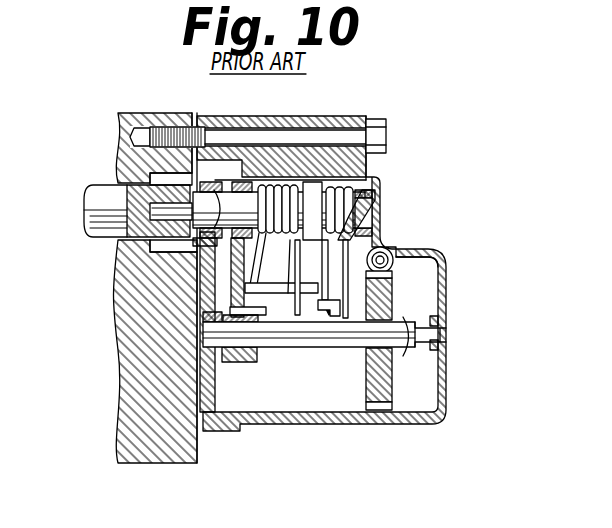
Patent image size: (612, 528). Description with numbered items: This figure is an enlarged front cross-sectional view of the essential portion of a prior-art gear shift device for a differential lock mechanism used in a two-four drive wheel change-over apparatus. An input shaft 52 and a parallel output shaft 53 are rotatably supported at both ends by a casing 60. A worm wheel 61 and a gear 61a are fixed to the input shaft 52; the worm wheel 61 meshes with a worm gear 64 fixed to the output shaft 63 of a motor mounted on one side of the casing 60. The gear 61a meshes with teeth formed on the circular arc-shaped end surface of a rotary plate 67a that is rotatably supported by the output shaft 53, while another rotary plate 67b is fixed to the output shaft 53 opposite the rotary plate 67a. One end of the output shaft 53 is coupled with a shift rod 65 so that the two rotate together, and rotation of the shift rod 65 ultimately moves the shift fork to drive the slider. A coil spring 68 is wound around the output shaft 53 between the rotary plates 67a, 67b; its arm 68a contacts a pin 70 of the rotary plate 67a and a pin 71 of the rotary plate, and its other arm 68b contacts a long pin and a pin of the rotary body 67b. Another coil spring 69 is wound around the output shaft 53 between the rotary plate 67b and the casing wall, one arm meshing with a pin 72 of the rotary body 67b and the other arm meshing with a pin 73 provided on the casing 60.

The input shaft 52 is at (311, 315).
The output shaft 53 is at (165, 245).
The casing 60 is at (448, 306).
The worm wheel 61 is at (392, 297).
The gear 61a is at (238, 362).
The output shaft of motor 63 is at (383, 252).
The worm gear 64 is at (400, 270).
The shift rod 65 is at (98, 192).
The rotary plate 67a is at (398, 196).
The rotary plate 67b is at (343, 240).
The coil spring 68 is at (283, 190).
The arm of coil spring 68a is at (350, 193).
The arm of coil spring 68b is at (288, 295).
The coil spring 69 is at (258, 288).
The pin 70 is at (266, 347).
The pin 71 is at (285, 294).
The pin 72 is at (330, 314).
The pin 73 is at (314, 318).